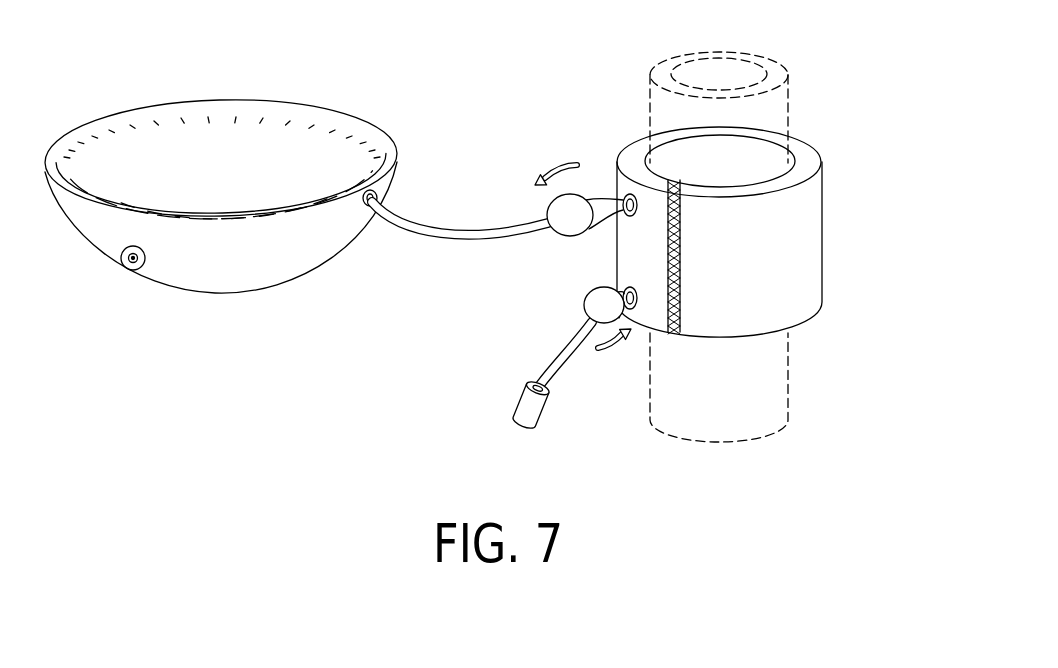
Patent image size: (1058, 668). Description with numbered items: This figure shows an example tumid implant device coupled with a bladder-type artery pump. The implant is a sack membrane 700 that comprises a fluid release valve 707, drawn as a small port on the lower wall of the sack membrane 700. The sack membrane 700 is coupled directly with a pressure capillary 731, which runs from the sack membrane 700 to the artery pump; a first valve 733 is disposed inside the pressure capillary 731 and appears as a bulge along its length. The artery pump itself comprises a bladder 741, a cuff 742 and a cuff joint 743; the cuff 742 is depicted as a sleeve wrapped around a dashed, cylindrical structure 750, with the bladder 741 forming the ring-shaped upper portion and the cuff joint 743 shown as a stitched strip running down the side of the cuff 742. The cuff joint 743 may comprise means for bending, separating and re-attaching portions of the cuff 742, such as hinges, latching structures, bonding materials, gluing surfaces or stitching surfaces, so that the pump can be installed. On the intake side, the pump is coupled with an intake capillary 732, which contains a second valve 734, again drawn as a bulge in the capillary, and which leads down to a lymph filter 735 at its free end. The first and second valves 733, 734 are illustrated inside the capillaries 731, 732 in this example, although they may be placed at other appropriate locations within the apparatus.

The sack membrane 700 is at (350, 250).
The fluid release valve 707 is at (123, 272).
The pressure capillary 731 is at (410, 213).
The intake capillary 732 is at (528, 373).
The first valve 733 is at (563, 237).
The second valve 734 is at (575, 307).
The lymph filter 735 is at (542, 418).
The bladder 741 is at (800, 158).
The cuff 742 is at (758, 250).
The cuff joint 743 is at (683, 292).
The limb 750 is at (773, 62).